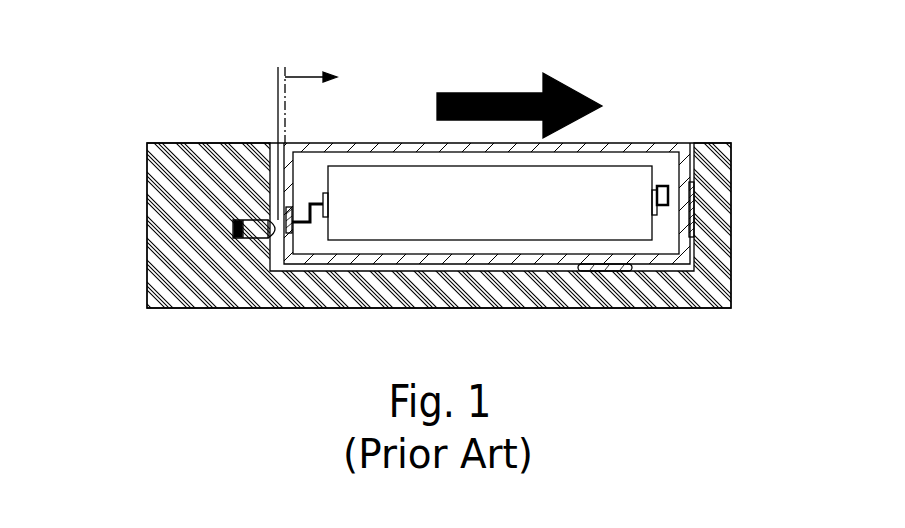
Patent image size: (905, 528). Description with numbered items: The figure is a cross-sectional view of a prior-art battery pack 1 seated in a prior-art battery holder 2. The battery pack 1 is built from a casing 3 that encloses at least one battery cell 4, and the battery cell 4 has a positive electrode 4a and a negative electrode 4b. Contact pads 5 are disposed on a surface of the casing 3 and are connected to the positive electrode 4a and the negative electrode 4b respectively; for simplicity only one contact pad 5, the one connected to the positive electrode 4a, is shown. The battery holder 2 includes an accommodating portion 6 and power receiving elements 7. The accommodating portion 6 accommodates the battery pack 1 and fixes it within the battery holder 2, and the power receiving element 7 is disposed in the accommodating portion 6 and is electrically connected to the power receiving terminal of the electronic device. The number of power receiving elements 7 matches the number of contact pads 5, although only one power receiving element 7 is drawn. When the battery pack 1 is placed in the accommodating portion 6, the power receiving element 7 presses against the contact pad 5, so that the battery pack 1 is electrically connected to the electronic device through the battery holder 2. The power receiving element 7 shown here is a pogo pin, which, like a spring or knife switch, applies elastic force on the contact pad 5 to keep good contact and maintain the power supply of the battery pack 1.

The battery pack 1 is at (738, 126).
The battery holder 2 is at (137, 217).
The casing 3 is at (613, 142).
The battery cell 4 is at (423, 173).
The positive electrode 4a is at (327, 203).
The negative electrode 4b is at (657, 190).
The contact pad 5 is at (292, 213).
The accommodating portion 6 is at (458, 266).
The power receiving element 7 is at (253, 238).